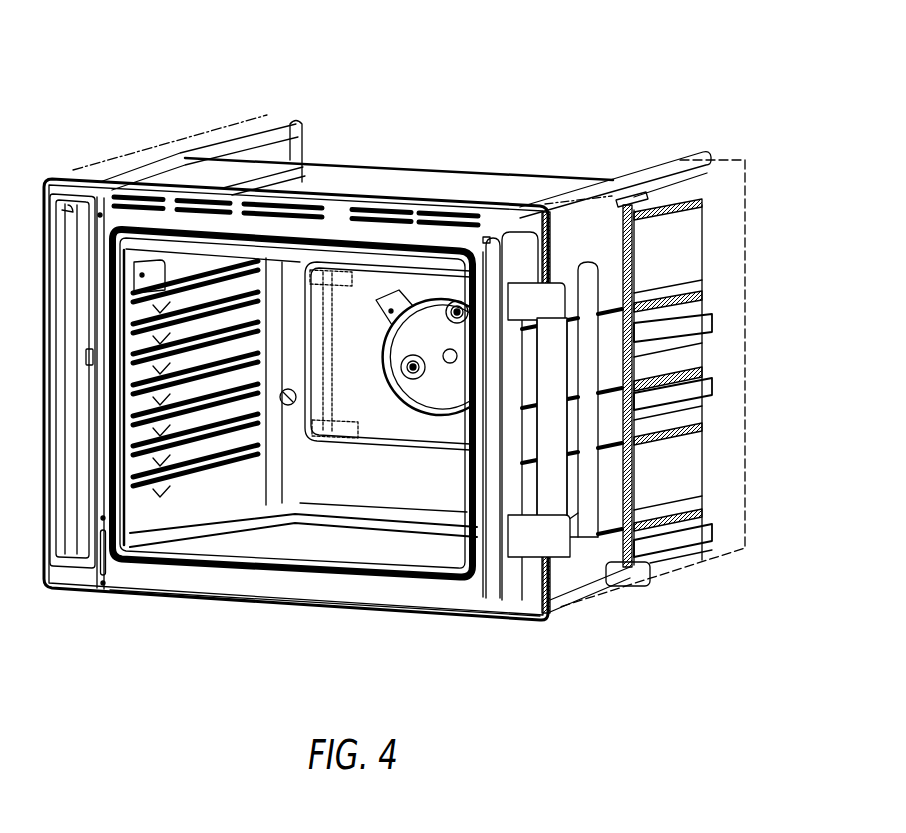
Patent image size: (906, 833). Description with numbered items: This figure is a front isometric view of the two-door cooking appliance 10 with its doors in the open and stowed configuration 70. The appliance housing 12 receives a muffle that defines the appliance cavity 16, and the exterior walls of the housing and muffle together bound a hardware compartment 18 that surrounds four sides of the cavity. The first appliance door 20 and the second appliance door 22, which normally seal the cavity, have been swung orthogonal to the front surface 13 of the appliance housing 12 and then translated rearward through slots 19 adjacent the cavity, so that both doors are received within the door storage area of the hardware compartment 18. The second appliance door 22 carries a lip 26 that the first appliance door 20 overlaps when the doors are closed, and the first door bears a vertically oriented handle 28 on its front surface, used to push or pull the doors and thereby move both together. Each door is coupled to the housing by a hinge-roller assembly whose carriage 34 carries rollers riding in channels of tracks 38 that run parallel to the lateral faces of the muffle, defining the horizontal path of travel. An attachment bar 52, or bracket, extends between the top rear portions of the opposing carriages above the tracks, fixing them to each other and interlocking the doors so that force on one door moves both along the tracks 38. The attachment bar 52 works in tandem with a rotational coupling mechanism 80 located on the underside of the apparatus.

The cooking appliance 10 is at (540, 97).
The appliance housing 12 is at (415, 606).
The front surface 13 is at (325, 599).
The appliance cavity 16 is at (292, 540).
The hardware compartment 18 is at (745, 283).
The slot 19 is at (522, 238).
The first appliance door 20 is at (585, 562).
The second appliance door 22 is at (62, 208).
The lip 26 is at (70, 520).
The handle 28 is at (522, 535).
The carriage 34 is at (634, 252).
The tracks 38 is at (683, 240).
The attachment bar 52 is at (435, 168).
The open and stowed configuration 70 is at (657, 73).
The rotational coupling mechanism 80 is at (646, 590).